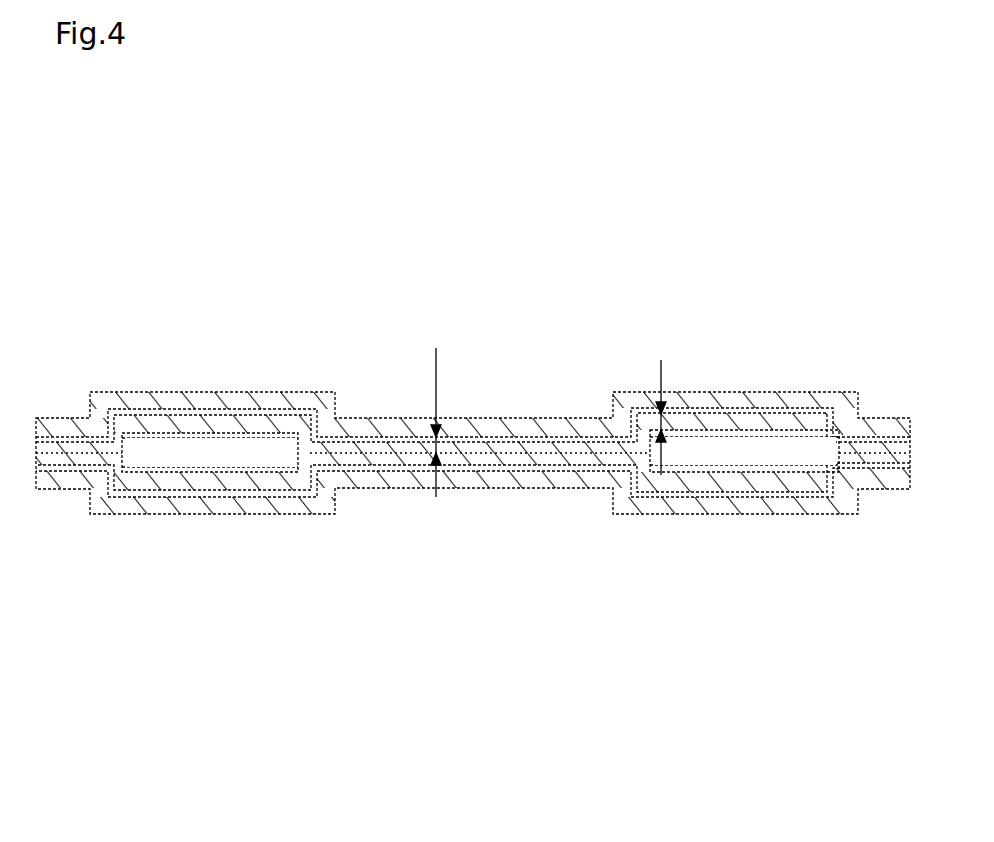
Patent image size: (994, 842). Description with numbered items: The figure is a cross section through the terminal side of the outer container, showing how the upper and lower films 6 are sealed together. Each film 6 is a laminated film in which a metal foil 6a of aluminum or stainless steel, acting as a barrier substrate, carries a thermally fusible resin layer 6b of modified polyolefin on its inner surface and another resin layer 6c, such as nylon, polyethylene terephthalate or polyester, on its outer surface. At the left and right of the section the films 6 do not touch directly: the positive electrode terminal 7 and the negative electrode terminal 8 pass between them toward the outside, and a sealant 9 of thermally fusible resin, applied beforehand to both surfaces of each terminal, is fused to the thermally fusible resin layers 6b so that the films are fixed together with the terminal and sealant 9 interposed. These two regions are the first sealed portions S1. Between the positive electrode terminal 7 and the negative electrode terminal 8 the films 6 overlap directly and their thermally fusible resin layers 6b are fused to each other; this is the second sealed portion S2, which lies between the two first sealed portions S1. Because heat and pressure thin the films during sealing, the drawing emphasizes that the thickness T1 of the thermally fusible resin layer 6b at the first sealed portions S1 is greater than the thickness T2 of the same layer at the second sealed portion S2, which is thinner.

The film 6 is at (110, 240).
The metal foil 6a is at (148, 410).
The thermally fusible resin layer 6b is at (173, 420).
The resin layer 6c is at (127, 397).
The positive electrode terminal 7 is at (215, 452).
The negative electrode terminal 8 is at (740, 443).
The sealant 9 is at (285, 433).
The first sealed portion S1 is at (217, 530).
The second sealed portion S2 is at (472, 513).
The thickness of thermally fusible resin layer at first sealed portions T1 is at (645, 415).
The thickness of thermally fusible resin layer at second sealed portion T2 is at (418, 422).